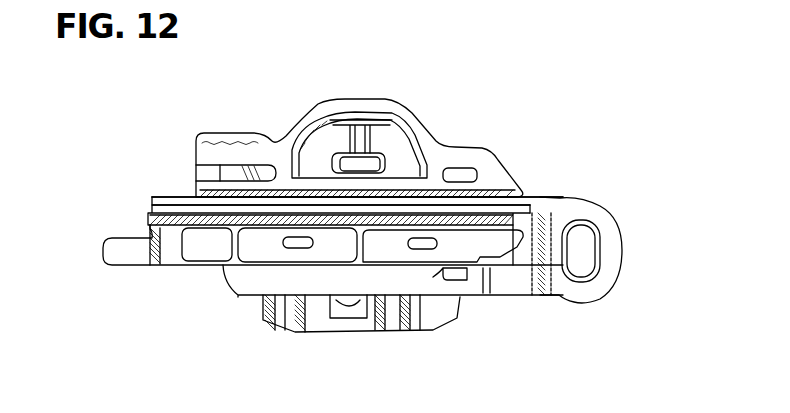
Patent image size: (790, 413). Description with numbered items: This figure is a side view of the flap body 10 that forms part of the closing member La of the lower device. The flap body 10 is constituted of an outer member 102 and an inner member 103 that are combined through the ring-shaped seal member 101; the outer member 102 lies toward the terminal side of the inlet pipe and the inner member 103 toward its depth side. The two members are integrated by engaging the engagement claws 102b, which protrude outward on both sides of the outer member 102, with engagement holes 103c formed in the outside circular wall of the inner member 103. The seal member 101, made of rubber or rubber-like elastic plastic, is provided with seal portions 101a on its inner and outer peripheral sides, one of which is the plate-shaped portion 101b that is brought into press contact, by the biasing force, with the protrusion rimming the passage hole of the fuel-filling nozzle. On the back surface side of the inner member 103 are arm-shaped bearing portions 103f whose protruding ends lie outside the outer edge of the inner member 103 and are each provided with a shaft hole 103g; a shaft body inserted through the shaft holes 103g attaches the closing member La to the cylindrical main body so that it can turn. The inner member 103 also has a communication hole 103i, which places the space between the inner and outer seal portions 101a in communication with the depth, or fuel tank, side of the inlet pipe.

The flap body 10 is at (488, 155).
The seal member 101 is at (163, 200).
The seal portion 101a is at (194, 207).
The plate-shaped portion 101b is at (172, 198).
The outer member 102 is at (432, 140).
The engagement claw 102b is at (357, 160).
The inner member 103 is at (248, 290).
The engagement hole 103c is at (334, 165).
The bearing portion 103f is at (610, 240).
The shaft hole 103g is at (578, 228).
The communication hole 103i is at (297, 250).
The closing member La is at (436, 98).